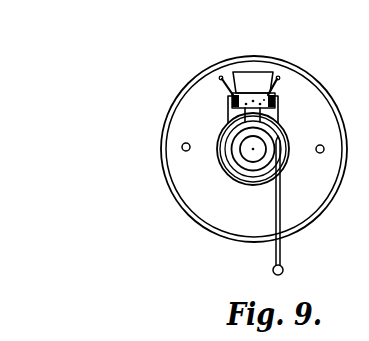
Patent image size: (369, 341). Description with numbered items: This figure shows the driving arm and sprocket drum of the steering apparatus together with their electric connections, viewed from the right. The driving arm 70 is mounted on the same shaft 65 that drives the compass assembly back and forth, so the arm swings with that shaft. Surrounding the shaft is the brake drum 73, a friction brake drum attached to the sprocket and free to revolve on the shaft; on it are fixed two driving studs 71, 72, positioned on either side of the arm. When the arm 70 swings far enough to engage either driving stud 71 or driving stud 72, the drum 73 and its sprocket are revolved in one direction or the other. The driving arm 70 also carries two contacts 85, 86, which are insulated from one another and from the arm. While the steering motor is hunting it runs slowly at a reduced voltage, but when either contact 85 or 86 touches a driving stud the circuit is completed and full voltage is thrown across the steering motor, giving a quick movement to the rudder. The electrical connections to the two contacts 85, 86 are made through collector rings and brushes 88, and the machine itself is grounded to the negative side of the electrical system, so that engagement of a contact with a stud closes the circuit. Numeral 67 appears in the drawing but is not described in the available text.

The shaft 65 is at (253, 151).
The knob 67 is at (240, 158).
The driving arm 70 is at (262, 78).
The driving stud 71 is at (182, 147).
The driving stud 72 is at (323, 146).
The brake drum 73 is at (199, 93).
The contact 85 is at (223, 79).
The contact 86 is at (279, 80).
The brushes 88 is at (281, 194).